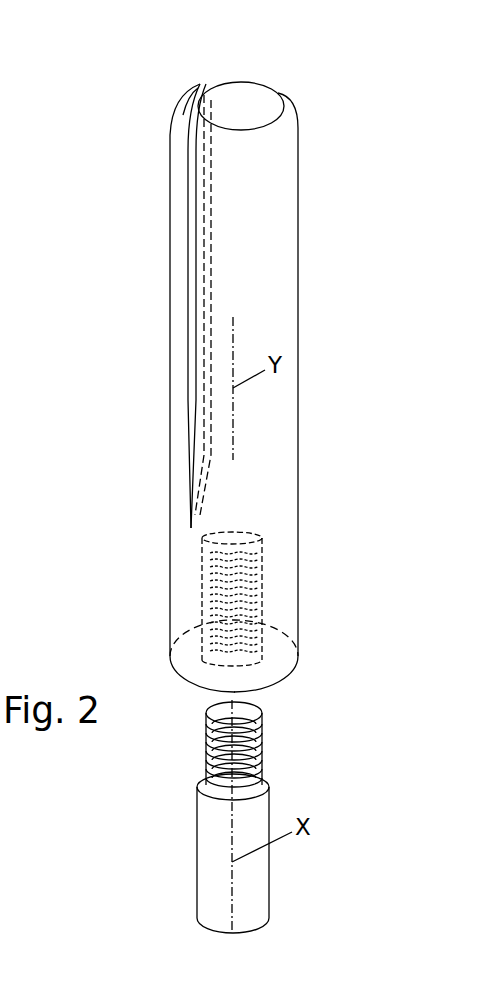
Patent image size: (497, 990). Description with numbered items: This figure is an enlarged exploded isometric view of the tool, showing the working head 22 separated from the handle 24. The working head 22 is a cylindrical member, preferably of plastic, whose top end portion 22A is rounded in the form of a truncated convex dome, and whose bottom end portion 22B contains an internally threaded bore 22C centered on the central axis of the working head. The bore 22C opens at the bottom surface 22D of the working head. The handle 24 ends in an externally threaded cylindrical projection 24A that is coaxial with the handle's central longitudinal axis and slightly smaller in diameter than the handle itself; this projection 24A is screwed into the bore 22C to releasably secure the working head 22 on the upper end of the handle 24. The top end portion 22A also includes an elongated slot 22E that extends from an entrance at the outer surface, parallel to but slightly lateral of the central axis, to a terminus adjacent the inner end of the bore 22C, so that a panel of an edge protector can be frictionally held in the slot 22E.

The working head 22 is at (166, 435).
The top end portion 22A is at (282, 138).
The bottom end portion 22B is at (282, 592).
The internally threaded bore 22C is at (207, 596).
The bottom surface 22D is at (290, 668).
The elongated slot 22E is at (190, 210).
The handle 24 is at (192, 868).
The externally threaded cylindrical projection 24A is at (207, 752).